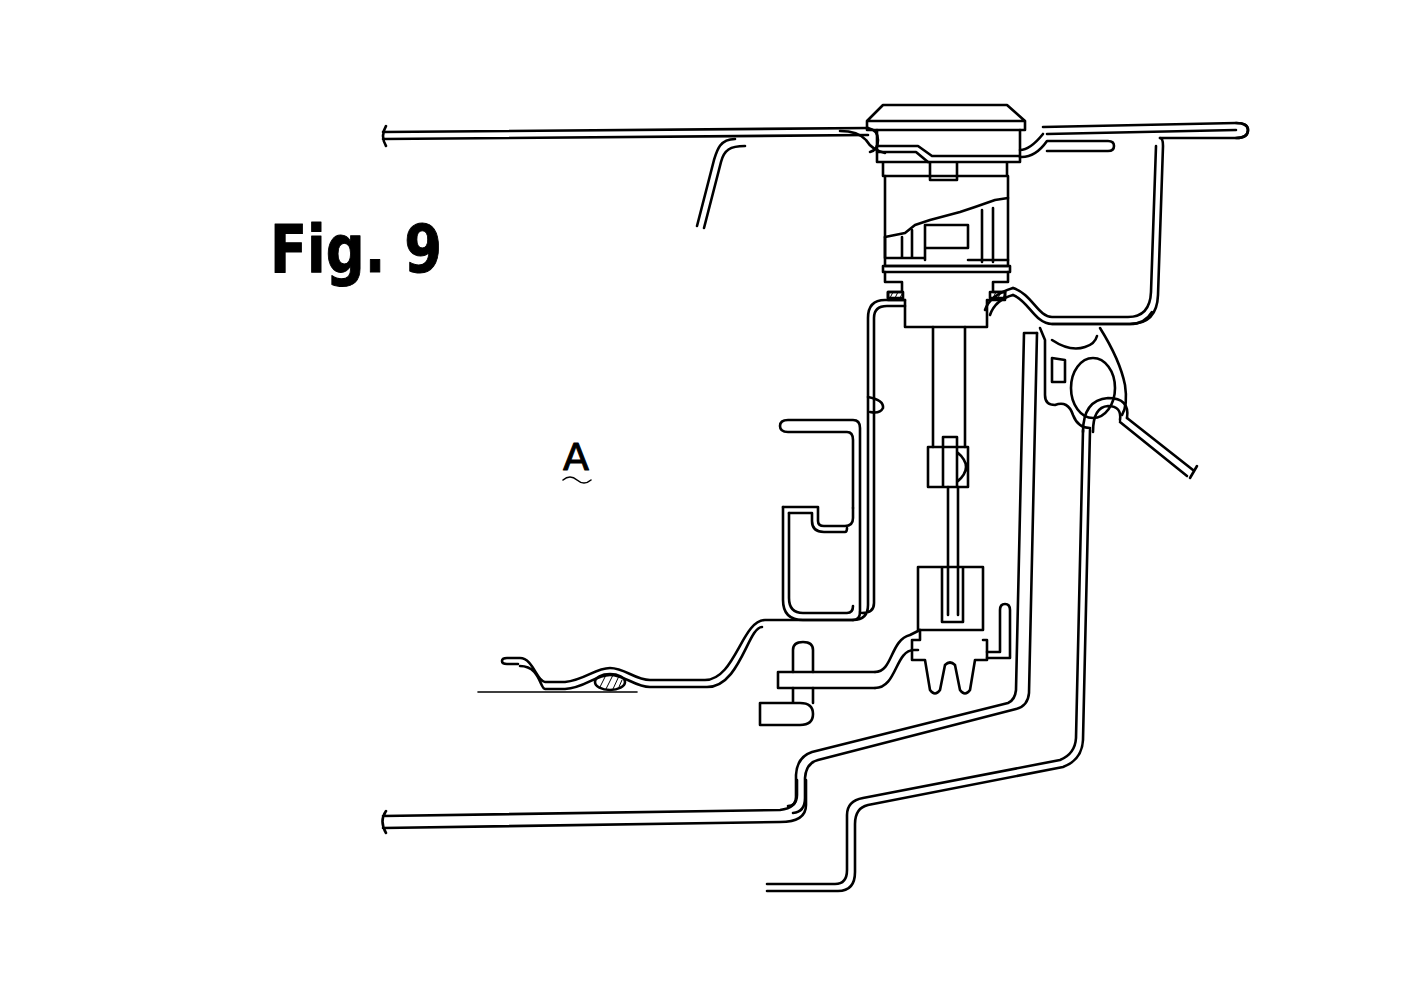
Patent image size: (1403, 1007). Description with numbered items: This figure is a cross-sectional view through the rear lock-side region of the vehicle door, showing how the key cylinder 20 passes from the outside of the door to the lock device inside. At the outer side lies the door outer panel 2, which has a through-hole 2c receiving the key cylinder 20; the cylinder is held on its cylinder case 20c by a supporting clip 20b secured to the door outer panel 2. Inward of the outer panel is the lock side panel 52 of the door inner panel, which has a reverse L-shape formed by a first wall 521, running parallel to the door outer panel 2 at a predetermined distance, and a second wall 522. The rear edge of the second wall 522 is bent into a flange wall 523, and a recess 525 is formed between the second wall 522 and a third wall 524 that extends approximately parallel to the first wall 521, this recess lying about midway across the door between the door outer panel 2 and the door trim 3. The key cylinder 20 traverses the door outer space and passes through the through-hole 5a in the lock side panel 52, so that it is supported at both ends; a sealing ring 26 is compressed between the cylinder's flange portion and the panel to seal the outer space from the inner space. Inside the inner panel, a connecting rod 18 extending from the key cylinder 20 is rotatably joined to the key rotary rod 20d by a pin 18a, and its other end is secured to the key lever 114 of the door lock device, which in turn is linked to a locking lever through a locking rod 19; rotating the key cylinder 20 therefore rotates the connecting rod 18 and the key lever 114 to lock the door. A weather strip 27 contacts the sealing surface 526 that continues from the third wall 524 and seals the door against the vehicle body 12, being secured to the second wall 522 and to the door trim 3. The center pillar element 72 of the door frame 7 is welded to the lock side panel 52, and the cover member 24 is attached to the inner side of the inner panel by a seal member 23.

The door outer panel 2 is at (1140, 120).
The through-hole 2c is at (884, 156).
The door trim 3 is at (542, 830).
The through-hole 5a is at (1122, 398).
The door frame 7 is at (774, 430).
The vehicle body 12 is at (1084, 738).
The connecting rod 18 is at (957, 520).
The pin 18a is at (928, 465).
The locking rod 19 is at (778, 723).
The key cylinder 20 is at (1012, 110).
The supporting clip 20b is at (706, 186).
The cylinder case 20c is at (892, 215).
The key rotary rod 20d is at (956, 422).
The seal member 23 is at (606, 691).
The cover member 24 is at (503, 694).
The sealing ring 26 is at (887, 294).
The weather strip 27 is at (1123, 382).
The lock side panel 52 is at (1164, 222).
The center pillar element 72 is at (783, 560).
The key lever 114 is at (983, 580).
The first wall 521 is at (684, 692).
The second wall 522 is at (874, 355).
The flange wall 523 is at (1207, 122).
The third wall 524 is at (1016, 300).
The recess 525 is at (870, 400).
The sealing surface 526 is at (1130, 325).